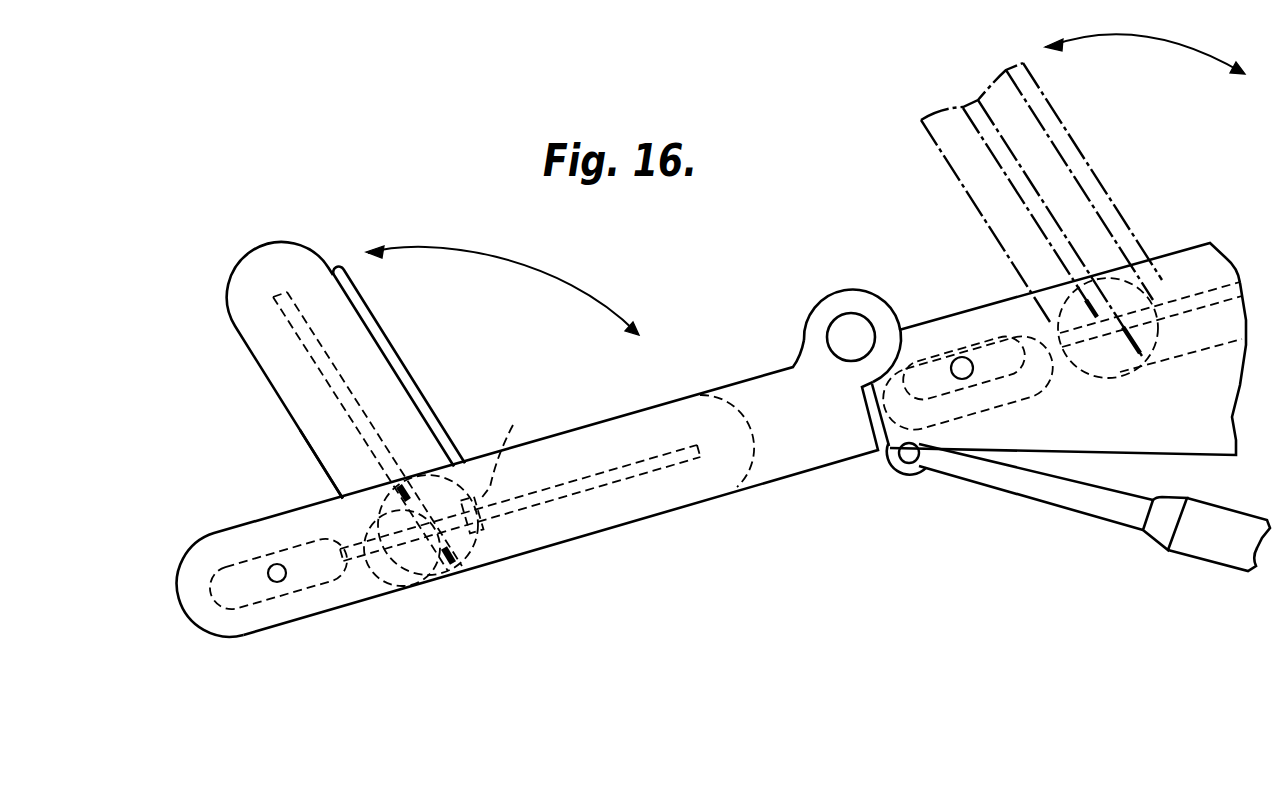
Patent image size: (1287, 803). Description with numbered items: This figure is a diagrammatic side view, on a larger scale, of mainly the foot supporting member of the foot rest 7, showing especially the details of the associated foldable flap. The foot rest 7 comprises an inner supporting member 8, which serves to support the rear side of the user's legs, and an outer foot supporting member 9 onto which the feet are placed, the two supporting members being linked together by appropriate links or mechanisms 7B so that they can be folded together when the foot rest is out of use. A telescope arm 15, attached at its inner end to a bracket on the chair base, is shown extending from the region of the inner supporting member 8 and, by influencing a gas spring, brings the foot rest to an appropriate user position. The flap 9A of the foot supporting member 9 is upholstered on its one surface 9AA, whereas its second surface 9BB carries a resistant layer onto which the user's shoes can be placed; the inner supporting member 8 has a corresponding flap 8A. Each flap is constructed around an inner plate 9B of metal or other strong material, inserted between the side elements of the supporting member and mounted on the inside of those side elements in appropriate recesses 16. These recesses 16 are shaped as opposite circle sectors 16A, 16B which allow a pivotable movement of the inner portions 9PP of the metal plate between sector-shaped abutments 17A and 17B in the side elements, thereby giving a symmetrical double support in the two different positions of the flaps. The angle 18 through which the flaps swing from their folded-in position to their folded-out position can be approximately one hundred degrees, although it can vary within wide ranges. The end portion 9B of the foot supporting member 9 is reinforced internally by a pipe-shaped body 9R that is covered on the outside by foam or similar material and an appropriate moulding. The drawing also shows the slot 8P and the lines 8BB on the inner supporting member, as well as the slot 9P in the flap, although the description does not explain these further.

The foot rest 7 is at (850, 457).
The links or mechanisms 7B is at (845, 330).
The inner supporting member 8 is at (1212, 400).
The flap 8A is at (977, 217).
The second handle rib 8BB is at (1100, 187).
The second handle slot 8P is at (1048, 237).
The outer supporting member 9 is at (783, 463).
The flap 9A is at (290, 393).
The first surface of the flap 9AA is at (306, 437).
The inner plate / end portion 9B is at (187, 568).
The second surface of the flap 9BB is at (393, 373).
The handle slot 9P is at (300, 337).
The inner portions of the metal plate 9PP is at (450, 587).
The pipe-shaped body 9R is at (242, 605).
The telescope arm 15 is at (1097, 503).
The recesses 16 is at (417, 565).
The circle sector 16A is at (378, 590).
The circle sector 16B is at (510, 429).
The sector-shaped abutment 17A is at (462, 548).
The sector-shaped abutment 17B is at (393, 492).
The angle 18 is at (562, 277).